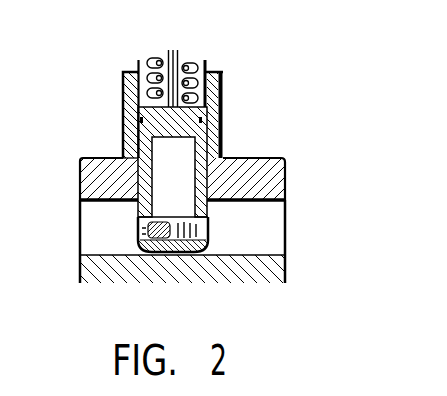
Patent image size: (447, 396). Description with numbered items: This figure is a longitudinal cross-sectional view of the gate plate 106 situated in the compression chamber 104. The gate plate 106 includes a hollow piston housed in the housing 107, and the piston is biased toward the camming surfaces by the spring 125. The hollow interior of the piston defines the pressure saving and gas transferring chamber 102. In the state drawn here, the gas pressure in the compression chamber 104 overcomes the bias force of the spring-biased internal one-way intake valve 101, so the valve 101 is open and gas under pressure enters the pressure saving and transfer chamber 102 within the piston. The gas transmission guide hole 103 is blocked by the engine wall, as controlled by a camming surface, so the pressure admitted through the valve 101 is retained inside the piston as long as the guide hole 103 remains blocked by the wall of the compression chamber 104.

The one-way intake valve 101 is at (165, 245).
The pressure saving and gas transferring chamber 102 is at (224, 122).
The gas transmission guide hole 103 is at (236, 143).
The compression chamber 104 is at (262, 224).
The gate plate 106 is at (222, 105).
The housing 107 is at (123, 92).
The spring 125 is at (202, 63).